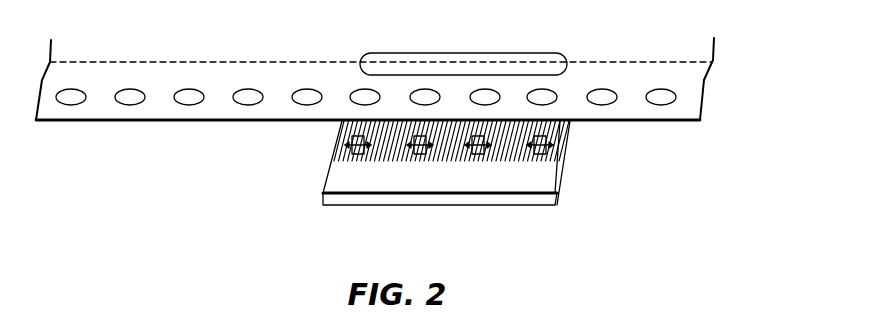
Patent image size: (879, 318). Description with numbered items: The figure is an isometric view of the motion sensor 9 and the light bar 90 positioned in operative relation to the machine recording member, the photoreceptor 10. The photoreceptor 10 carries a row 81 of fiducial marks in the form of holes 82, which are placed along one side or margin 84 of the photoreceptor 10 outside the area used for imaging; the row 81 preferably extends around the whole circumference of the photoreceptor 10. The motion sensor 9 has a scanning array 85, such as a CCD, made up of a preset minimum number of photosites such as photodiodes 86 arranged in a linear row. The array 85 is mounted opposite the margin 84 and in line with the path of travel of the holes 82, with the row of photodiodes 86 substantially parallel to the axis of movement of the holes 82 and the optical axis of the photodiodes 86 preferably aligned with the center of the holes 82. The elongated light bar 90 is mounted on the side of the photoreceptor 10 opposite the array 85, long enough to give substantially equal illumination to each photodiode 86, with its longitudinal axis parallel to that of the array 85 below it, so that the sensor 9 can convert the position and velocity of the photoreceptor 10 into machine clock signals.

The motion sensor 9 is at (295, 161).
The photoreceptor 10 is at (655, 135).
The row of fiducial marks 81 is at (628, 80).
The holes 82 is at (245, 97).
The margin 84 is at (73, 121).
The scanning array of sensor 85 is at (443, 187).
The photodiodes 86 is at (502, 160).
The light bar 90 is at (477, 62).